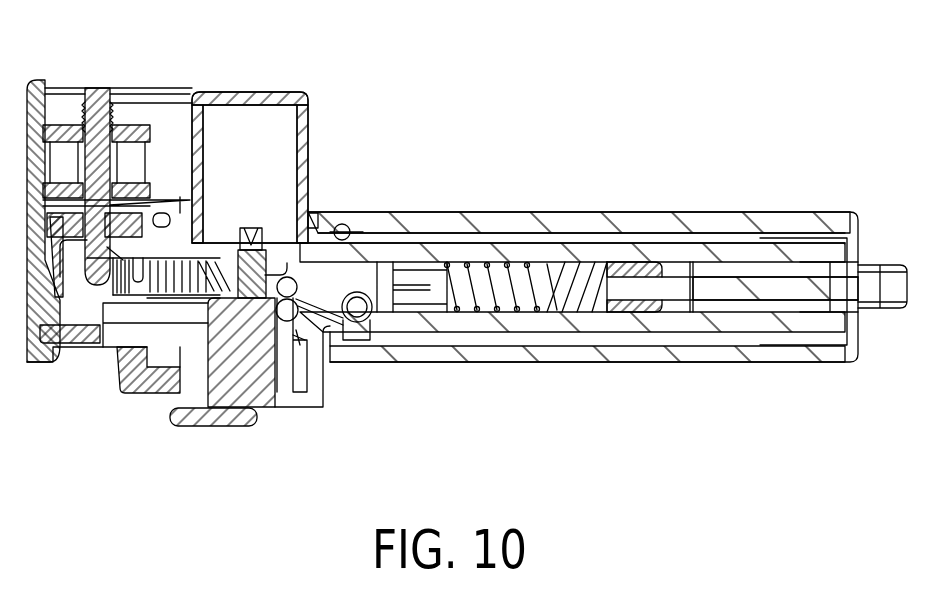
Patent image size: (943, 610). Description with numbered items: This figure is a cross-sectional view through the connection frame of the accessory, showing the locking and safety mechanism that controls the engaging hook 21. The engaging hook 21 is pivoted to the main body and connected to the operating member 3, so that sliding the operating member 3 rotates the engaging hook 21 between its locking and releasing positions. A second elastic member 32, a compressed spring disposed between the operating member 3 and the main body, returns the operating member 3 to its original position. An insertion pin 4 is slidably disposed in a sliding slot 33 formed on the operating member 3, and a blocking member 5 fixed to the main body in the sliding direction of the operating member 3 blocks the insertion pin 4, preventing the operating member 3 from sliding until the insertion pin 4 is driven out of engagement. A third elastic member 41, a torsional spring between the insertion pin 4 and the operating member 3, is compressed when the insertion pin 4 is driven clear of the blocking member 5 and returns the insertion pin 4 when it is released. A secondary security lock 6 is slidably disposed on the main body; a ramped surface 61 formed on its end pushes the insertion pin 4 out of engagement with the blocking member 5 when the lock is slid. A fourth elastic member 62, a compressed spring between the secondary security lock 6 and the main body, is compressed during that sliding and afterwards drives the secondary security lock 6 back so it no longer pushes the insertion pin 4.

The operating member 3 is at (280, 402).
The sliding slot 33 is at (297, 330).
The insertion pin 4 is at (293, 277).
The third elastic member 41 is at (337, 315).
The blocking member 5 is at (248, 262).
The secondary security lock 6 is at (73, 337).
The ramped surface 61 is at (274, 268).
The fourth elastic member 62 is at (220, 252).
The engaging hook 21 is at (762, 287).
The second elastic member 32 is at (507, 312).